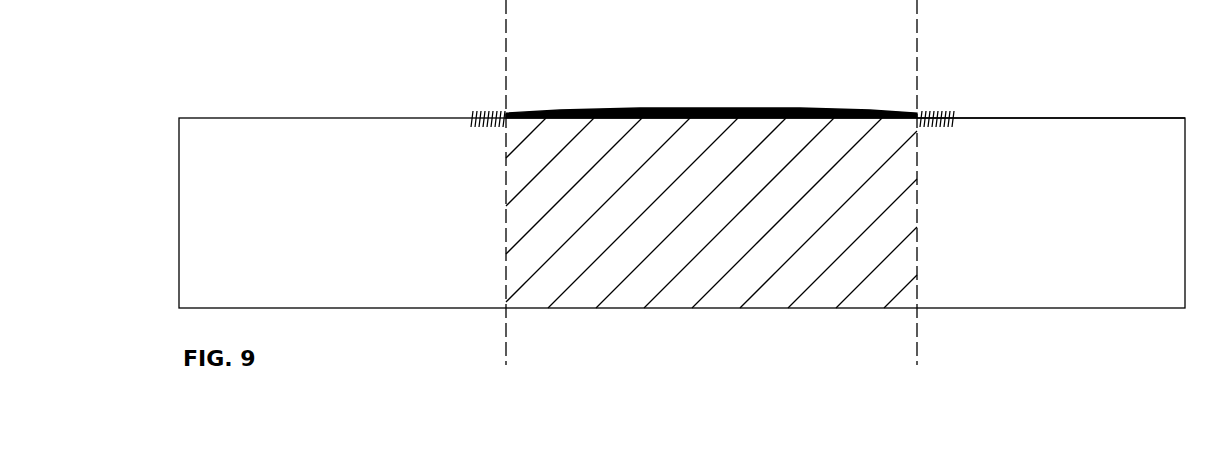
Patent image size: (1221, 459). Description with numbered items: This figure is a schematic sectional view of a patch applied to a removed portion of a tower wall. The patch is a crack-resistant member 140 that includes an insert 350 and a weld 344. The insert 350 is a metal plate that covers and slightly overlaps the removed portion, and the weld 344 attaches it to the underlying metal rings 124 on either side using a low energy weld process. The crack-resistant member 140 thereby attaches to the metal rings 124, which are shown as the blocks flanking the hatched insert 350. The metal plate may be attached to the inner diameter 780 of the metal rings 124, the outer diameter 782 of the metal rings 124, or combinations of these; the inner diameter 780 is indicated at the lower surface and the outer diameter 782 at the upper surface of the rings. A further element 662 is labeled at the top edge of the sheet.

The metal rings 124 is at (320, 226).
The crack-resistant member 140 is at (603, 98).
The weld 344 is at (483, 110).
The insert 350 is at (776, 152).
The element 662 is at (1055, 5).
The inner diameter 780 is at (1035, 308).
The outer diameter 782 is at (1108, 118).